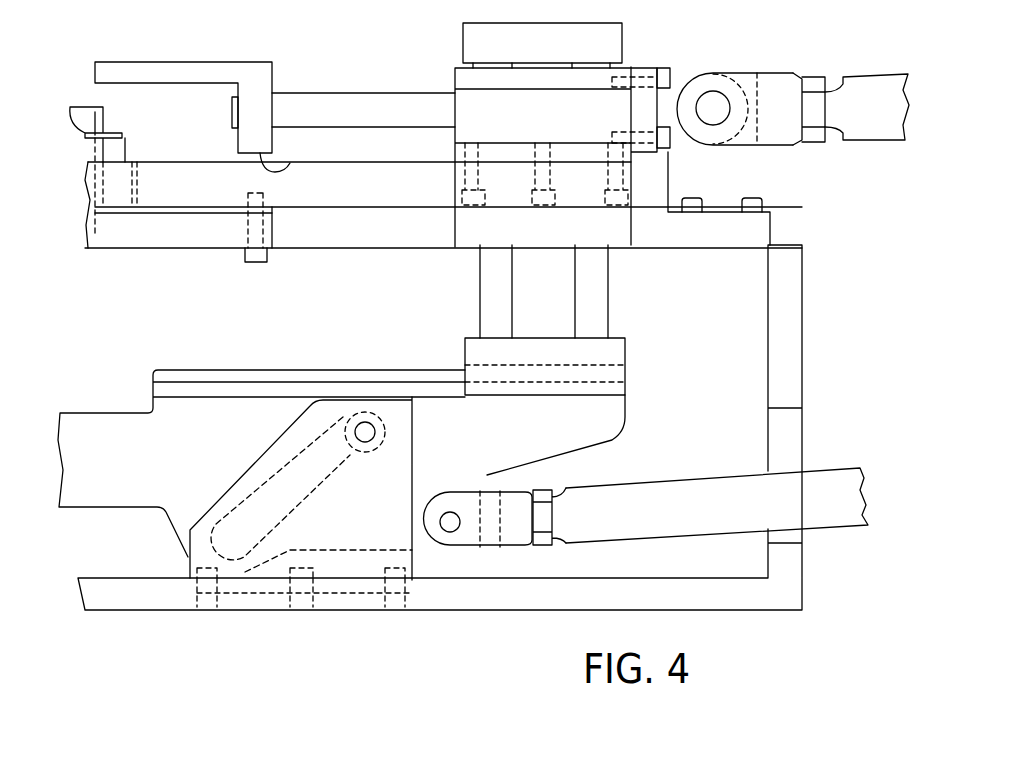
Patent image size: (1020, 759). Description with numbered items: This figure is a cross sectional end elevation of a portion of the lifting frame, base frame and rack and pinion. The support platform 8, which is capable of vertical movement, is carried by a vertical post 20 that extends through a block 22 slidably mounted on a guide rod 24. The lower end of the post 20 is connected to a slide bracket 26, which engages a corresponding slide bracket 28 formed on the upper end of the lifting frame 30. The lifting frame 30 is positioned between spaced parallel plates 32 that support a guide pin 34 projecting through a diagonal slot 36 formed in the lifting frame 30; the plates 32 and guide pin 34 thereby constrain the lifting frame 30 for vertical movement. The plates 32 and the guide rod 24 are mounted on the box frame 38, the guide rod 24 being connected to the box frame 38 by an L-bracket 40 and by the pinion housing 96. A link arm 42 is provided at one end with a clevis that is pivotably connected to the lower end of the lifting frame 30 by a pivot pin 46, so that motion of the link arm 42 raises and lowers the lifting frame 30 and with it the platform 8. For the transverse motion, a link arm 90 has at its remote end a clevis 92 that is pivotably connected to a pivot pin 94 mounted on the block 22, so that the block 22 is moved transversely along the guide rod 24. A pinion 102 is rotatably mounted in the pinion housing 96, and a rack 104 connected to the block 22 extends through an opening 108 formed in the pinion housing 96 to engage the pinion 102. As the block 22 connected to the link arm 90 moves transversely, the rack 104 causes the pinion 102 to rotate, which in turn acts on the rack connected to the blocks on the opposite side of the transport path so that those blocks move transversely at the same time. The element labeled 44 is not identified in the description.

The support platform 8 is at (578, 42).
The vertical post 20 is at (595, 313).
The block 22 is at (462, 80).
The guide rod 24 is at (398, 108).
The slide bracket 26 is at (610, 357).
The slide bracket 28 is at (215, 377).
The lifting frame 30 is at (608, 420).
The plate 32 is at (302, 437).
The guide pin 34 is at (372, 432).
The diagonal slot 36 is at (260, 508).
The box frame 38 is at (787, 287).
The L-bracket 40 is at (657, 192).
The link arm 42 is at (725, 497).
The coupling nut 44 is at (488, 510).
The pivot pin 46 is at (447, 523).
The link arm 90 is at (875, 105).
The clevis 92 is at (780, 97).
The pivot pin 94 is at (717, 102).
The pinion housing 96 is at (213, 72).
The pinion 102 is at (115, 150).
The rack 104 is at (220, 172).
The opening 108 is at (290, 167).